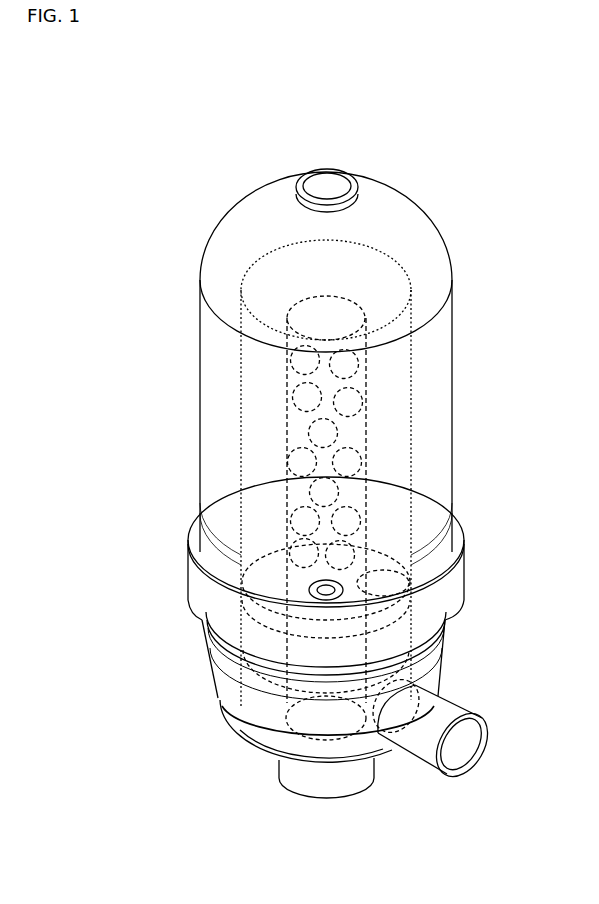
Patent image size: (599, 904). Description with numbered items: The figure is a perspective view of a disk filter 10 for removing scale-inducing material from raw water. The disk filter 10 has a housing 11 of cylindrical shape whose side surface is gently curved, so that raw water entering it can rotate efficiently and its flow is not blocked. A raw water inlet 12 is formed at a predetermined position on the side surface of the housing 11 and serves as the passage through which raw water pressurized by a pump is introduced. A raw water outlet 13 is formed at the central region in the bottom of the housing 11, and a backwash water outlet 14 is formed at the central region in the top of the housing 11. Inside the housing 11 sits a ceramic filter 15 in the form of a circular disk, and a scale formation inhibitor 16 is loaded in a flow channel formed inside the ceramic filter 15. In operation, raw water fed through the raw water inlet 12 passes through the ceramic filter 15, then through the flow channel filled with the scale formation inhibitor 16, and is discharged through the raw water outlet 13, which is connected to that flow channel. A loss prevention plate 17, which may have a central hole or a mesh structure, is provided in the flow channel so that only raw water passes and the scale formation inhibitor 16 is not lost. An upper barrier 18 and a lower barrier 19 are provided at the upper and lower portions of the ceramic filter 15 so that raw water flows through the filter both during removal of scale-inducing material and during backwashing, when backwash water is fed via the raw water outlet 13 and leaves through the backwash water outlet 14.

The disk filter 10 is at (492, 89).
The housing 11 is at (440, 343).
The raw water inlet 12 is at (447, 708).
The raw water outlet 13 is at (349, 777).
The backwash water outlet 14 is at (335, 181).
The ceramic filter 15 is at (395, 433).
The scale formation inhibitor 16 is at (302, 467).
The loss prevention plate 17 is at (405, 582).
The upper barrier 18 is at (388, 284).
The lower barrier 19 is at (226, 696).